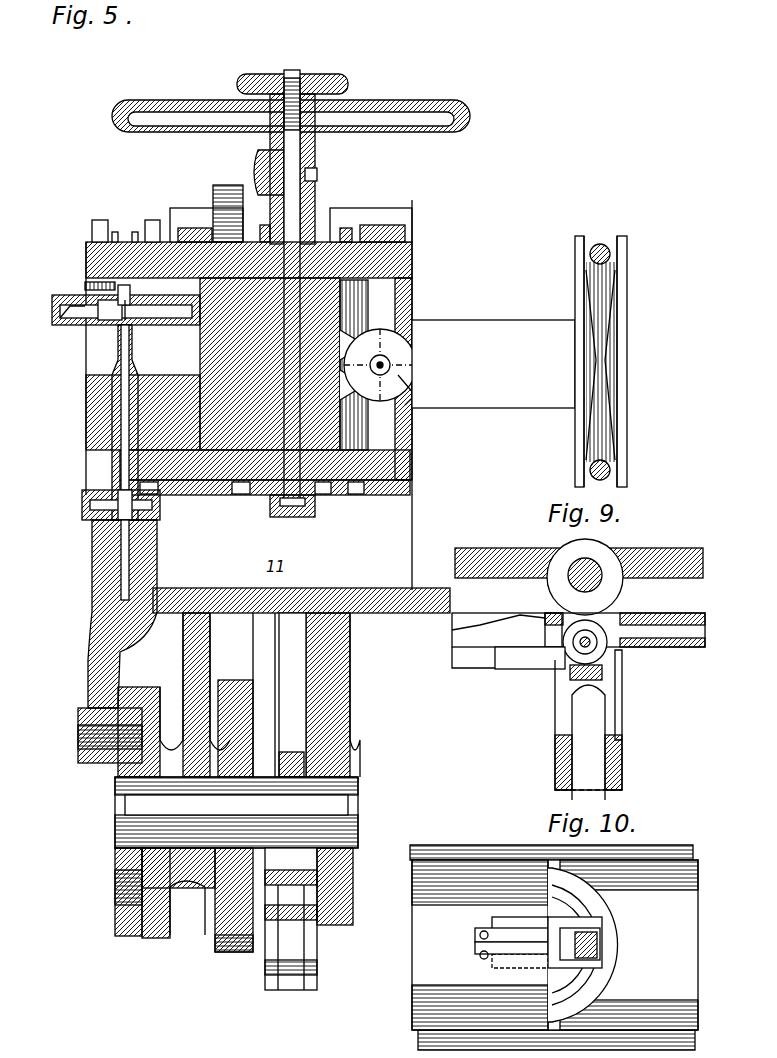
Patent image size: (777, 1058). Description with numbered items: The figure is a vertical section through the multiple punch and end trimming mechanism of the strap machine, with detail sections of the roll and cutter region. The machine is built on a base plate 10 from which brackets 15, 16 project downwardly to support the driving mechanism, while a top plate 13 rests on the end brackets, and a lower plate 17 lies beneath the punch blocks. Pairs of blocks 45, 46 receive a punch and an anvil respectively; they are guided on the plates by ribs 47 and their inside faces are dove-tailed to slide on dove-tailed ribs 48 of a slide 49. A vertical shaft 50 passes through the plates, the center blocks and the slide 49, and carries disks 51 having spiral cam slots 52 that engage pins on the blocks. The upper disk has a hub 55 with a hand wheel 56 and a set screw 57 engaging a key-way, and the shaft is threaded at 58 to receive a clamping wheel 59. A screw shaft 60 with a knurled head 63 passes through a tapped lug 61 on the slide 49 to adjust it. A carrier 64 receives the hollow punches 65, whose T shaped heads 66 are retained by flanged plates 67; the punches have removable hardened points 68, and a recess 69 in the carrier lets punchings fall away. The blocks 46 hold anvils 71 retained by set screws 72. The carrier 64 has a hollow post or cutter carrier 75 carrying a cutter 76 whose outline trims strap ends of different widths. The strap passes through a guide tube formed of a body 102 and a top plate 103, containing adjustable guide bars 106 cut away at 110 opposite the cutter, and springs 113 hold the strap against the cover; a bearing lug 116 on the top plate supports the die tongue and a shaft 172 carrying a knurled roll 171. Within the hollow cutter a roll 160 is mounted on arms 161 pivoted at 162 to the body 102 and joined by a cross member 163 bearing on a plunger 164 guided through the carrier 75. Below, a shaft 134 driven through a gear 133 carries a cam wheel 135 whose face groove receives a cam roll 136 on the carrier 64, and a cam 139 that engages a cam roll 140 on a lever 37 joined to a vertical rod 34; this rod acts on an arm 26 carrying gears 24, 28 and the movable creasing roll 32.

In FIG. 5, the base plate 10 is at (380, 606).
In FIG. 5, the top plate 13 is at (410, 235).
In FIG. 9, the top plate 13 is at (668, 553).
In FIG. 5, the bracket 15 is at (336, 920).
In FIG. 5, the bracket 16 is at (190, 890).
In FIG. 5, the lower plate 17 is at (396, 470).
In FIG. 5, the gear 24 is at (230, 185).
In FIG. 5, the arm 26 is at (185, 214).
In FIG. 5, the gear 28 is at (220, 226).
In FIG. 5, the creasing roll 32 is at (95, 240).
In FIG. 5, the vertical rod 34 is at (300, 700).
In FIG. 5, the lever 37 is at (278, 945).
In FIG. 5, the punch block 45 is at (330, 425).
In FIG. 5, the anvil block 46 is at (412, 278).
In FIG. 5, the ribs 47 is at (296, 245).
In FIG. 5, the dove-tailed ribs 48 is at (345, 332).
In FIG. 5, the slide 49 is at (385, 332).
In FIG. 5, the vertical shaft 50 is at (292, 518).
In FIG. 5, the disks 51 is at (392, 233).
In FIG. 5, the spiral cam slots 52 is at (370, 232).
In FIG. 5, the hub 55 is at (306, 170).
In FIG. 5, the hand wheel 56 is at (455, 113).
In FIG. 5, the set screw 57 is at (318, 178).
In FIG. 5, the threaded end 58 is at (296, 78).
In FIG. 5, the clamping wheel 59 is at (340, 88).
In FIG. 5, the screw shaft 60 is at (386, 362).
In FIG. 5, the lug 61 is at (405, 405).
In FIG. 5, the knurled head 63 is at (395, 372).
In FIG. 5, the carrier 64 is at (100, 548).
In FIG. 5, the punches 65 is at (114, 462).
In FIG. 5, the T shaped heads 66 is at (90, 508).
In FIG. 5, the flanged plates 67 is at (84, 497).
In FIG. 5, the hardened points 68 is at (118, 357).
In FIG. 5, the recess 69 is at (118, 565).
In FIG. 5, the anvils 71 is at (122, 305).
In FIG. 5, the set screws 72 is at (85, 286).
In FIG. 9, the cutter carrier 75 is at (622, 786).
In FIG. 9, the cutter 76 is at (622, 720).
In FIG. 10, the cutter 76 is at (615, 945).
In FIG. 9, the body part 102 is at (478, 648).
In FIG. 10, the body part 102 is at (460, 850).
In FIG. 9, the top plate 103 is at (477, 613).
In FIG. 10, the guide bars 106 is at (555, 945).
In FIG. 10, the cut-away 110 is at (602, 888).
In FIG. 5, the springs 113 is at (138, 322).
In FIG. 9, the springs 113 is at (520, 625).
In FIG. 9, the bearing lug 116 is at (548, 565).
In FIG. 5, the gear 133 is at (226, 950).
In FIG. 5, the shaft 134 is at (236, 812).
In FIG. 5, the cam wheel 135 is at (120, 920).
In FIG. 5, the cam roll 136 is at (110, 770).
In FIG. 5, the cam 139 is at (304, 762).
In FIG. 5, the cam roll 140 is at (292, 930).
In FIG. 9, the roll 160 is at (612, 635).
In FIG. 10, the roll 160 is at (600, 938).
In FIG. 9, the arms 161 is at (545, 665).
In FIG. 10, the arms 161 is at (512, 925).
In FIG. 5, the pivot 162 is at (58, 318).
In FIG. 9, the pivot 162 is at (503, 662).
In FIG. 10, the pivot 162 is at (530, 958).
In FIG. 9, the cross member 163 is at (602, 673).
In FIG. 10, the cross member 163 is at (598, 962).
In FIG. 9, the plunger 164 is at (588, 720).
In FIG. 10, the plunger 164 is at (608, 930).
In FIG. 9, the knurled roll 171 is at (615, 560).
In FIG. 9, the shaft 172 is at (588, 565).